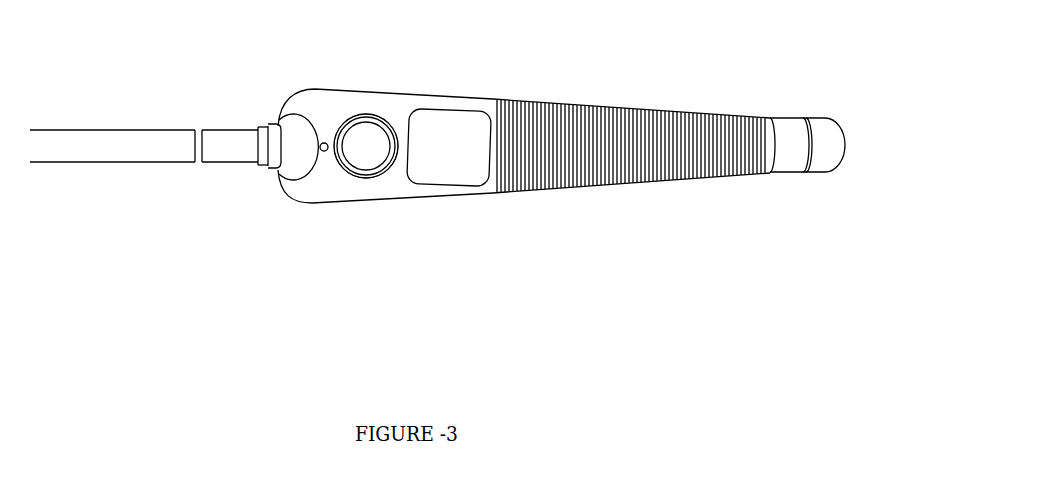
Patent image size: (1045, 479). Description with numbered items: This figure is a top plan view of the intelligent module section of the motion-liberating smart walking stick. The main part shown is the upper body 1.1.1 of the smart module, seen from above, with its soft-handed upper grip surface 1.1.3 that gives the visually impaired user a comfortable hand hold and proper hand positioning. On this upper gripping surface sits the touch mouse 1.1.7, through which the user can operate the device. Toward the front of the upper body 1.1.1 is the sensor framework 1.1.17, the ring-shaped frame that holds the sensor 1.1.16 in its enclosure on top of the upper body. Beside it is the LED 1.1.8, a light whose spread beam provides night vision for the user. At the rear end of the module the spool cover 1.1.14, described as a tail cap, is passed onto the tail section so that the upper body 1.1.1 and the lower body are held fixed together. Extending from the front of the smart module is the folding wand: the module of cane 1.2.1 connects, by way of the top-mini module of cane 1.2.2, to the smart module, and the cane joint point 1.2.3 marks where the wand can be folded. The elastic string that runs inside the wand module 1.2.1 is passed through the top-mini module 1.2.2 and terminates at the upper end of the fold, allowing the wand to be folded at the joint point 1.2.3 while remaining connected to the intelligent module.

The module of cane 1.2.1 is at (65, 132).
The top-mini module of cane 1.2.2 is at (245, 163).
The cane joint point 1.2.3 is at (197, 163).
The upper body 1.1.1 is at (447, 100).
The upper grip surface 1.1.3 is at (703, 155).
The touch mouse 1.1.7 is at (448, 160).
The LED 1.1.8 is at (326, 151).
The spool cover 1.1.14 is at (837, 127).
The sensor 1.1.16 is at (372, 172).
The sensor framework 1.1.17 is at (368, 132).